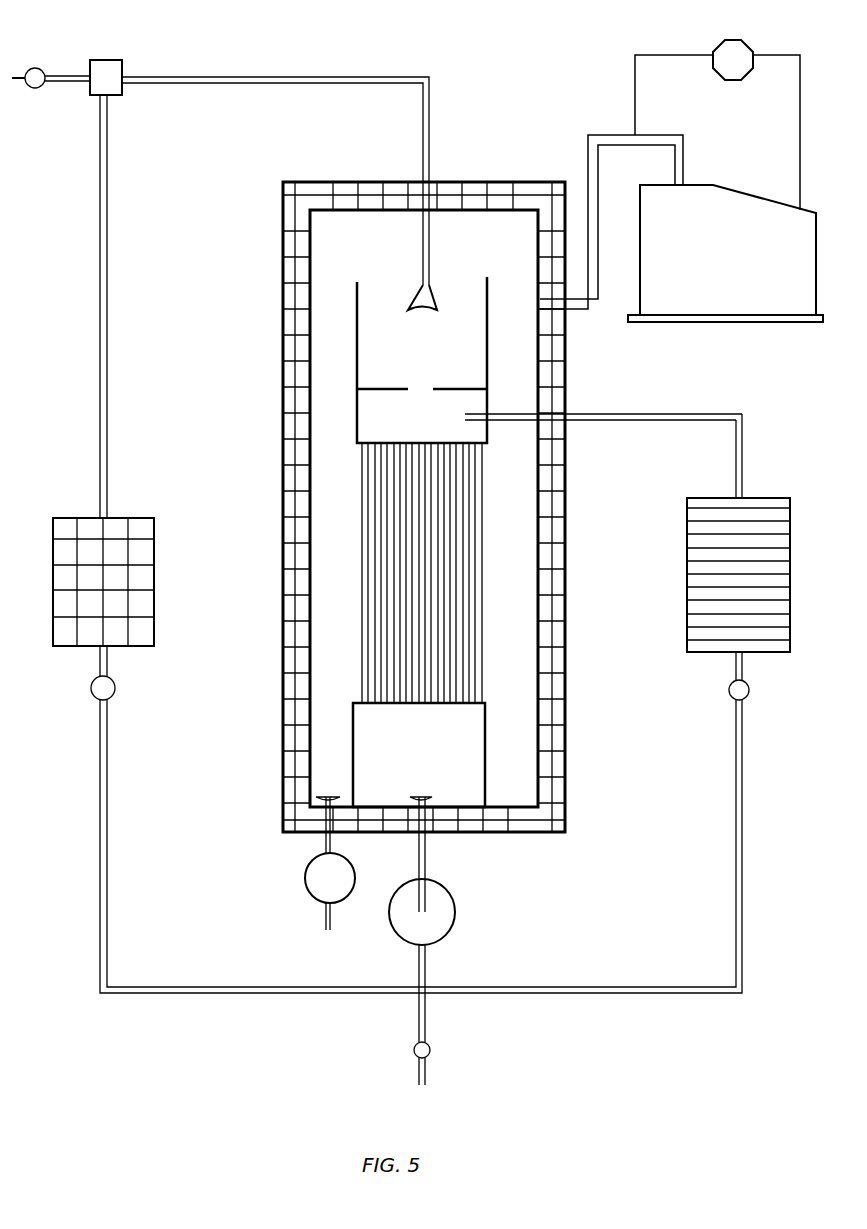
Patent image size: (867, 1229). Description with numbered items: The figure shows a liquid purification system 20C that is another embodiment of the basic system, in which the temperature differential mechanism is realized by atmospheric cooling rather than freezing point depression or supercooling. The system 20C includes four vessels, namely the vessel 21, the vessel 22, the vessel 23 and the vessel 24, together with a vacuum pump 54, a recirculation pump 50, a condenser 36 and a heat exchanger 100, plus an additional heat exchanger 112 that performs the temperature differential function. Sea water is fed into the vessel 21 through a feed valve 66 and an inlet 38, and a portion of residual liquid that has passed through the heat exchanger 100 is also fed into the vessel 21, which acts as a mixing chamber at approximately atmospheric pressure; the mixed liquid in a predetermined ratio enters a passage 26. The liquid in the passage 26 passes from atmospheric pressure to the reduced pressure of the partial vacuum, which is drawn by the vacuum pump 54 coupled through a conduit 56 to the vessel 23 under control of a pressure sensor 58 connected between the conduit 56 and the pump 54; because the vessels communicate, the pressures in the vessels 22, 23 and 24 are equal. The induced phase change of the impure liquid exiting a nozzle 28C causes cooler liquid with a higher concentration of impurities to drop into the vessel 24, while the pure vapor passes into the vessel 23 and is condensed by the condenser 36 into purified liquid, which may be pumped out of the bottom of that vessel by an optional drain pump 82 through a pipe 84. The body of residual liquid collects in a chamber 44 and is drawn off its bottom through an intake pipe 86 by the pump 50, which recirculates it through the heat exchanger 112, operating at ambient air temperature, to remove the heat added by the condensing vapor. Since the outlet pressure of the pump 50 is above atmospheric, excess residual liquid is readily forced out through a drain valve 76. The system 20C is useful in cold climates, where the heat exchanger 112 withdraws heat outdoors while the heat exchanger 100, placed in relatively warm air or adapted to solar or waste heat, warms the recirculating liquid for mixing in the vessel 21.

The system 20C is at (241, 1053).
The vessel 21 is at (105, 72).
The vessel 22 is at (358, 372).
The vessel 23 is at (312, 464).
The vessel 24 is at (372, 392).
The passage 26 is at (429, 112).
The nozzle 28C is at (424, 302).
The condenser 36 is at (366, 606).
The inlet 38 is at (68, 84).
The chamber 44 is at (470, 737).
The recirculation pump 50 is at (445, 910).
The vacuum pump 54 is at (725, 202).
The conduit 56 is at (622, 145).
The pressure sensor 58 is at (720, 48).
The feed valve 66 is at (45, 62).
The drain valve 76 is at (426, 1048).
The drain pump 82 is at (316, 880).
The pipe 84 is at (326, 850).
The intake pipe 86 is at (430, 778).
The heat exchanger 100 is at (65, 530).
The heat exchanger 112 is at (752, 508).